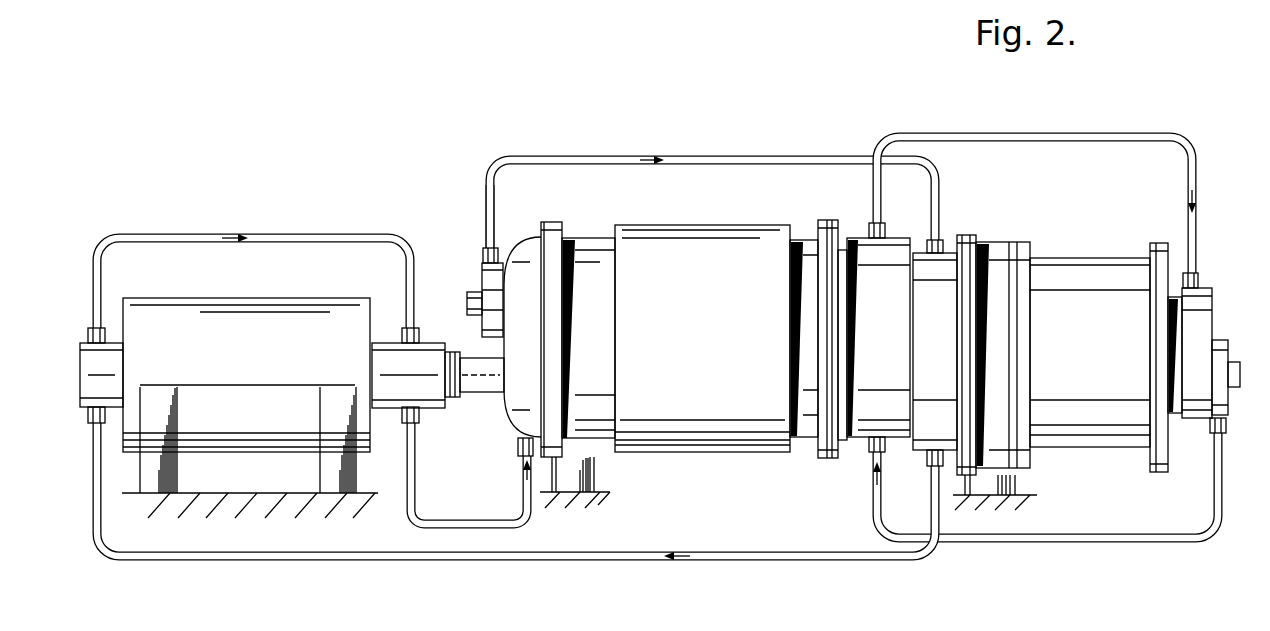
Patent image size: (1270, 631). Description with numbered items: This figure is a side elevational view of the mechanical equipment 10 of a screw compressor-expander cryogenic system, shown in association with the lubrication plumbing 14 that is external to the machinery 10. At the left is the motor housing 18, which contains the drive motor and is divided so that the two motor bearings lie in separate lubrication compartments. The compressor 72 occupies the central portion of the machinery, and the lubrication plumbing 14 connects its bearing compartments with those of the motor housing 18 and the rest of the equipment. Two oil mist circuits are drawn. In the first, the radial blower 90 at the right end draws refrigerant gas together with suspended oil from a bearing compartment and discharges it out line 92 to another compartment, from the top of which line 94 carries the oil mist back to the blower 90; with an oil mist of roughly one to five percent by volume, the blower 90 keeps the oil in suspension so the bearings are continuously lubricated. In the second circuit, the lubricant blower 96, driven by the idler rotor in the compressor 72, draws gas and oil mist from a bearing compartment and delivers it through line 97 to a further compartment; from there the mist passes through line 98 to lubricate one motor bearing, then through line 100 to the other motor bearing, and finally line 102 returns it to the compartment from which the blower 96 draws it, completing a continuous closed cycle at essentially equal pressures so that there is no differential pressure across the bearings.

The mechanical equipment 10 is at (296, 131).
The lubrication plumbing 14 is at (586, 152).
The motor housing 18 is at (295, 298).
The compressor 72 is at (752, 450).
The radial blower 90 is at (1226, 345).
The line 92 is at (1192, 547).
The line 94 is at (1201, 151).
The lubricant blower 96 is at (480, 262).
The line 97 is at (504, 155).
The line 98 is at (924, 560).
The line 100 is at (145, 234).
The line 102 is at (432, 518).